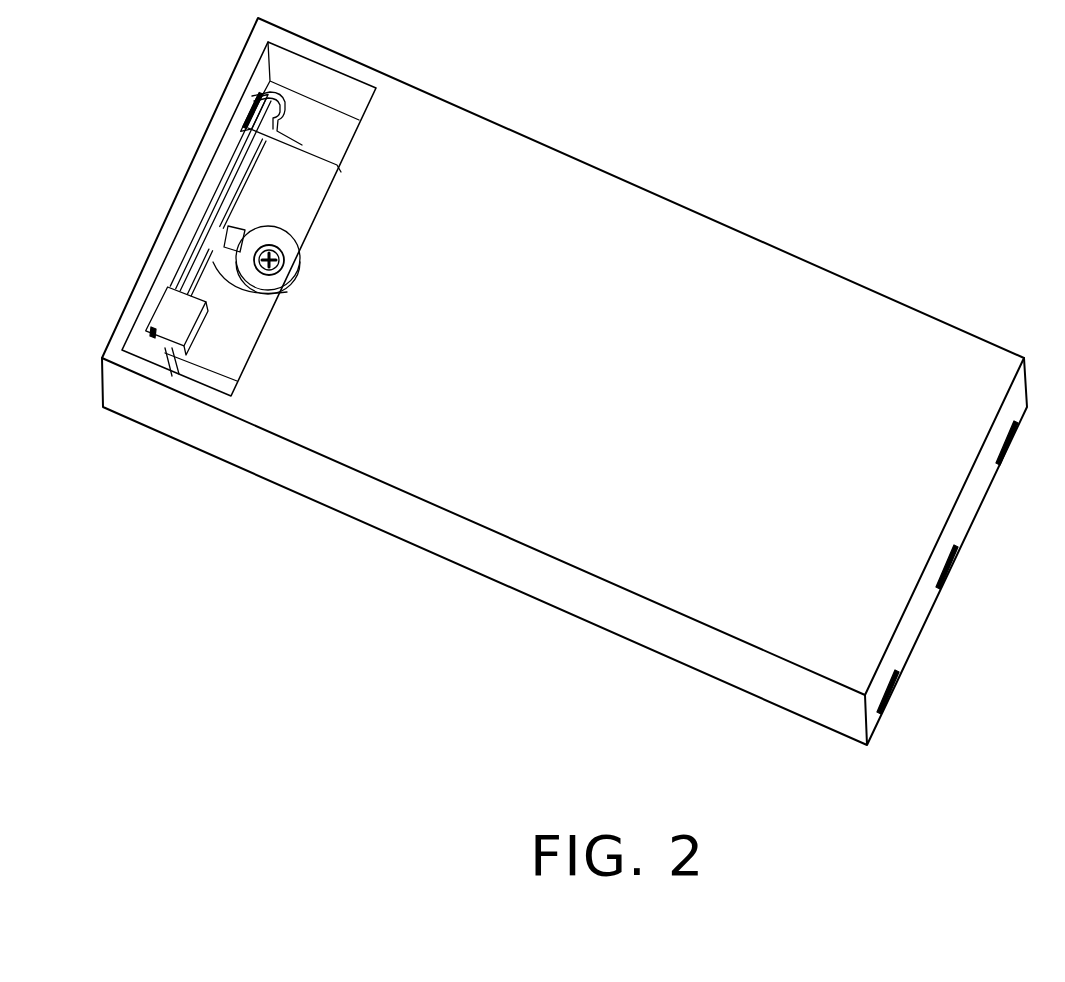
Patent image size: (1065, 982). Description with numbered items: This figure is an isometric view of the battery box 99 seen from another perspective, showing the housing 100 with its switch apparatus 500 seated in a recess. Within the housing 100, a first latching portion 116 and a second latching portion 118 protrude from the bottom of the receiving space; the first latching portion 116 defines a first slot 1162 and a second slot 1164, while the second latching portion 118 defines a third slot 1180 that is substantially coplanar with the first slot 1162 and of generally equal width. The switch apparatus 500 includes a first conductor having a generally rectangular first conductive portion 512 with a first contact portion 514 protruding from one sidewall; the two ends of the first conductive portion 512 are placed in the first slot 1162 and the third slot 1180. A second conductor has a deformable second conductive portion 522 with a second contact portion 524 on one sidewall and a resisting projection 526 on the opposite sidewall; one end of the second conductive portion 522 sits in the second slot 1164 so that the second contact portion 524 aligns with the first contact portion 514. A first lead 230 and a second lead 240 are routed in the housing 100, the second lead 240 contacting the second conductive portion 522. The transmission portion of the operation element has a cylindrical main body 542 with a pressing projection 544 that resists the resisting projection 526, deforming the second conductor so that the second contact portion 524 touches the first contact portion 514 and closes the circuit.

The battery box 99 is at (693, 112).
The housing 100 is at (781, 318).
The first lead 230 is at (308, 153).
The second lead 240 is at (210, 375).
The third slot 1180 is at (253, 100).
The second latching portion 118 is at (262, 118).
The first contact portion 514 is at (263, 140).
The second contact portion 524 is at (253, 158).
The pressing projection 544 is at (242, 240).
The resisting projection 526 is at (223, 248).
The switch apparatus 500 is at (227, 273).
The first conductive portion 512 is at (265, 204).
The second conductive portion 522 is at (298, 236).
The main body 542 is at (292, 256).
The first latching portion 116 is at (170, 320).
The first slot 1162 is at (152, 332).
The second slot 1164 is at (163, 348).